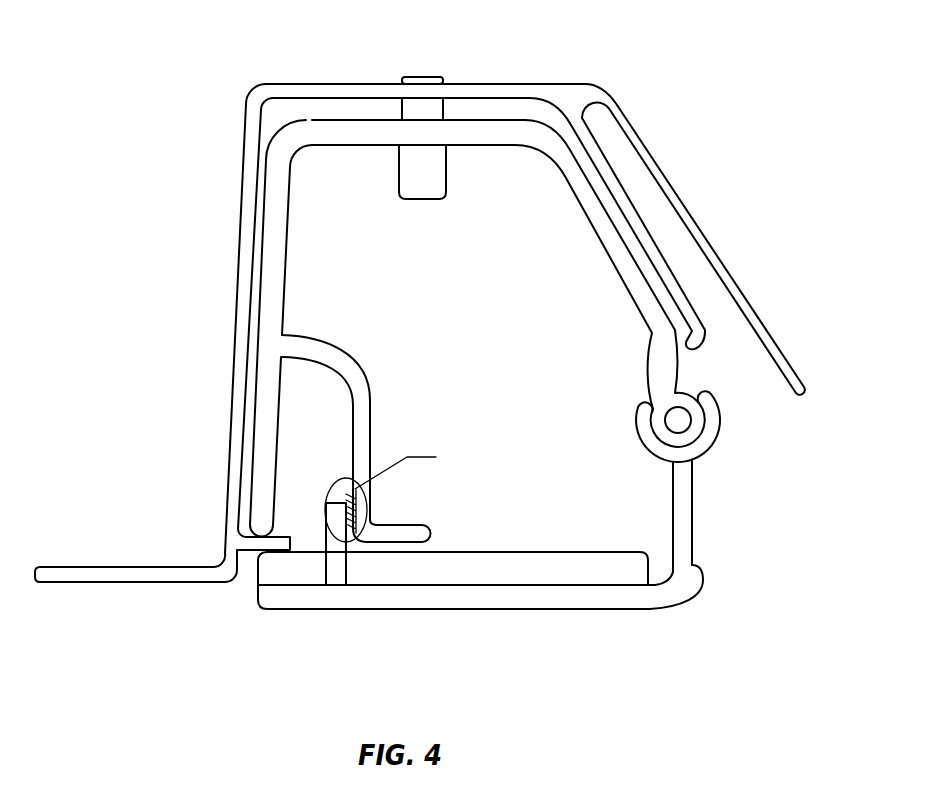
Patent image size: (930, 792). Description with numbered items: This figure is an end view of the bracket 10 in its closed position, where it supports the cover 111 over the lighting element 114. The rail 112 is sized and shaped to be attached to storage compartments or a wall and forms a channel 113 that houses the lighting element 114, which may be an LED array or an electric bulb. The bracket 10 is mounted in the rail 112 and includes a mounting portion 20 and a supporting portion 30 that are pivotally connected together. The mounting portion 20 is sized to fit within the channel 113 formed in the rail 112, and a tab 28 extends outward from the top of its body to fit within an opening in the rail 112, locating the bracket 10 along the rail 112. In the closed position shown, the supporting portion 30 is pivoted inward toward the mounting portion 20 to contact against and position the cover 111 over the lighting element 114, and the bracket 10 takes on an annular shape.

The bracket 10 is at (420, 370).
The mounting portion 20 is at (610, 233).
The tab 28 is at (423, 78).
The supporting portion 30 is at (448, 600).
The cover 111 is at (500, 573).
The rail 112 is at (498, 85).
The channel 113 is at (300, 105).
The lighting element 114 is at (410, 172).